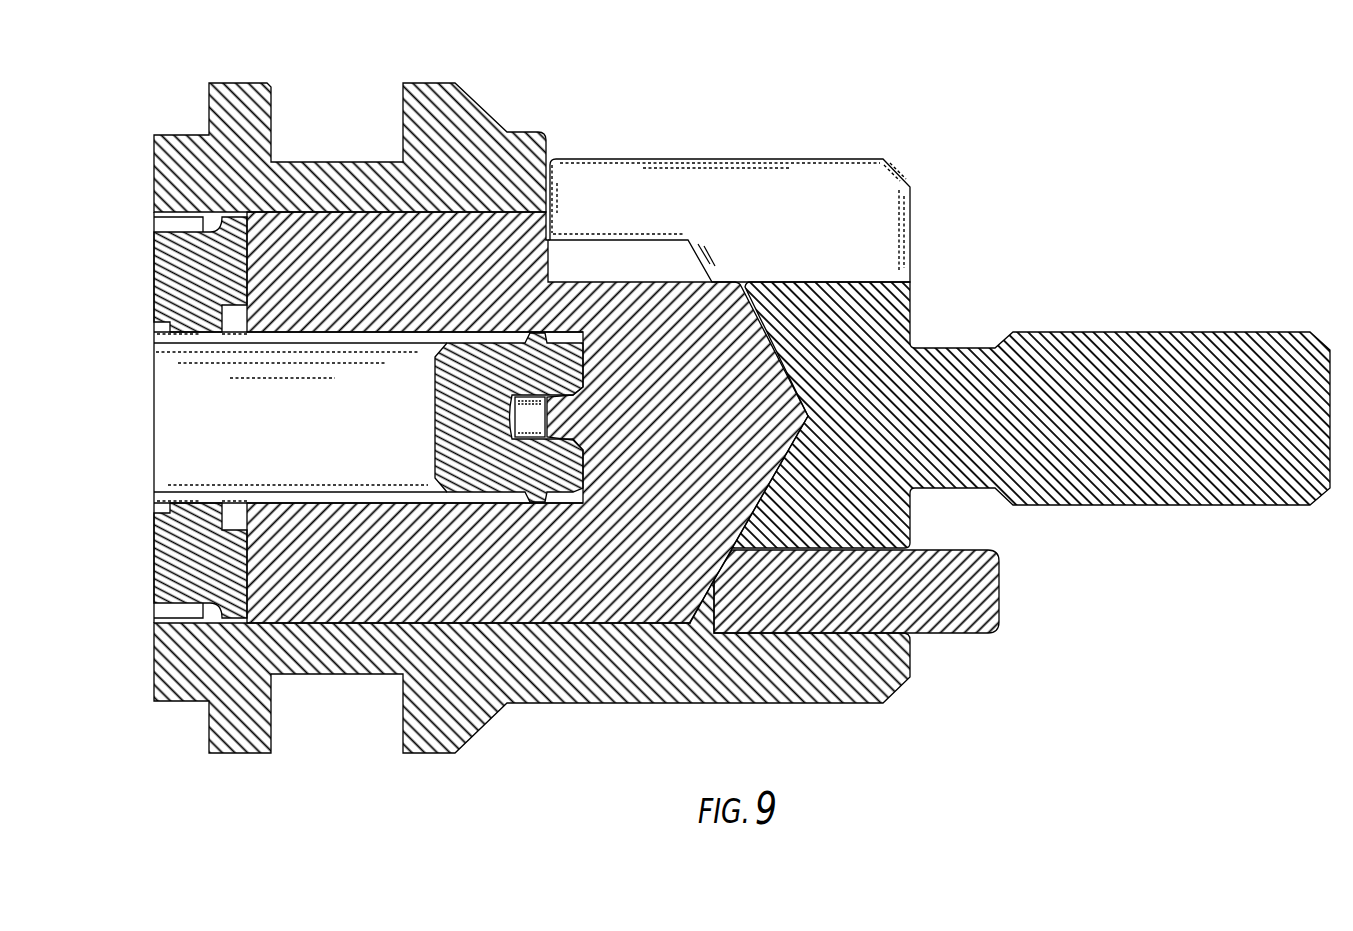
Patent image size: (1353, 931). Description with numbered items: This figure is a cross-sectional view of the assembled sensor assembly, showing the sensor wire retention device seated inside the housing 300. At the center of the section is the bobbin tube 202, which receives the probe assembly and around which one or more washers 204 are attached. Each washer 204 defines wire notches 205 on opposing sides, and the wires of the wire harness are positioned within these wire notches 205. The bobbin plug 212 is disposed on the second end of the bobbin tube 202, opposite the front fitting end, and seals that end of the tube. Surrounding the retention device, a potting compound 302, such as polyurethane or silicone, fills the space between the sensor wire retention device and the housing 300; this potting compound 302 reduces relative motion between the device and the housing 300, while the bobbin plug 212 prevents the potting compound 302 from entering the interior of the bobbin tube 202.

The bobbin tube 202 is at (166, 429).
The washer 204 is at (176, 301).
The wire notch 205 is at (181, 226).
The bobbin plug 212 is at (487, 473).
The housing 300 is at (803, 168).
The potting compound 302 is at (711, 363).